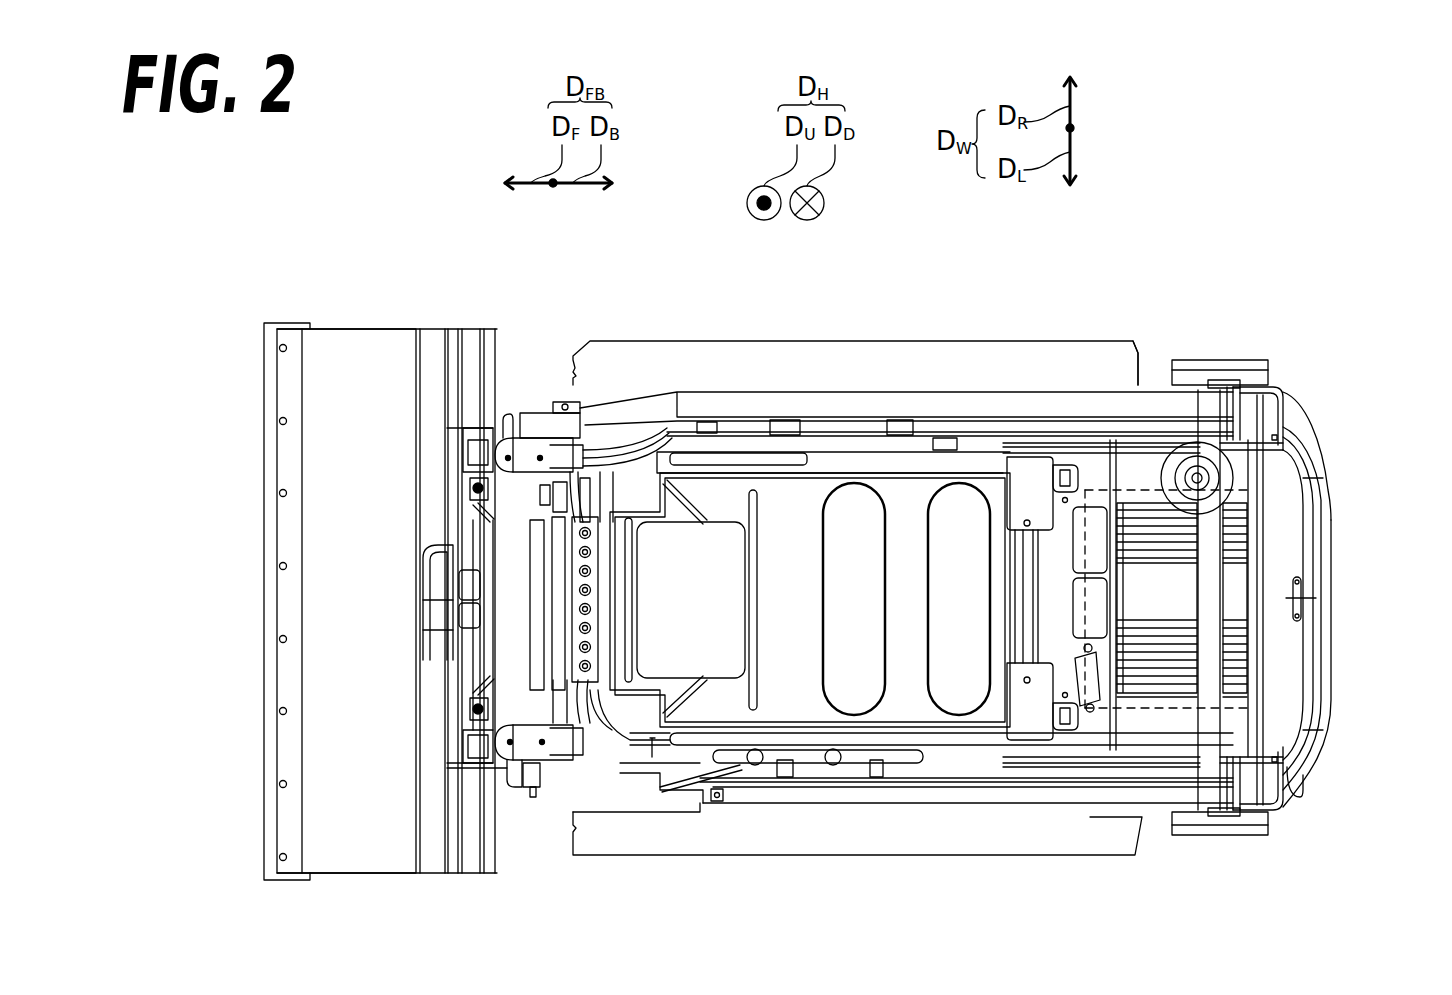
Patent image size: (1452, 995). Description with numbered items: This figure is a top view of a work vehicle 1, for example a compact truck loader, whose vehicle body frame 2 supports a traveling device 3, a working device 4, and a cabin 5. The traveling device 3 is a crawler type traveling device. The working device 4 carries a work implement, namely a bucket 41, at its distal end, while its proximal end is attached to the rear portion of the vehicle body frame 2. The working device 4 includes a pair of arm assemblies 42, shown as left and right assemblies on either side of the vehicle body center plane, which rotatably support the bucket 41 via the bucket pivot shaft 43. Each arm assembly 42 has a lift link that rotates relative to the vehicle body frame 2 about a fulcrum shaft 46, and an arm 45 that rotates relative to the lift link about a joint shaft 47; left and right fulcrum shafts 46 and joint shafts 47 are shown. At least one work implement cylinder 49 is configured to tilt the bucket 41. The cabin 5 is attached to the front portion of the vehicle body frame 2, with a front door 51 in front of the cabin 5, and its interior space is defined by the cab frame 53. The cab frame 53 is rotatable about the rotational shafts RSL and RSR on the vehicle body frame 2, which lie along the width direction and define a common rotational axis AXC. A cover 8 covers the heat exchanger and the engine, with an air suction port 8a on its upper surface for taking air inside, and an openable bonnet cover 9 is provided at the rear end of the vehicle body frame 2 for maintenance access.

The work vehicle 1 is at (345, 205).
The vehicle body frame 2 is at (1282, 393).
The traveling device 3 is at (915, 343).
The working device 4 is at (412, 246).
The cabin 5 is at (805, 500).
The cover 8 is at (1138, 467).
The air suction port 8a is at (1153, 505).
The bonnet cover 9 is at (1310, 512).
The work implement (bucket) 41 is at (345, 318).
The arm assemblies 42 is at (862, 405).
The bucket pivot shaft 43 is at (527, 793).
The arm 45 is at (1213, 408).
The fulcrum shaft 46 is at (1197, 388).
The joint shaft 47 is at (1227, 442).
The work implement cylinder 49 is at (483, 457).
The front door 51 is at (607, 662).
The cab frame 53 is at (847, 463).
The rotational shaft RSR is at (1063, 463).
The rotational shaft RSL is at (1070, 747).
The rotational axis AXC is at (1050, 757).